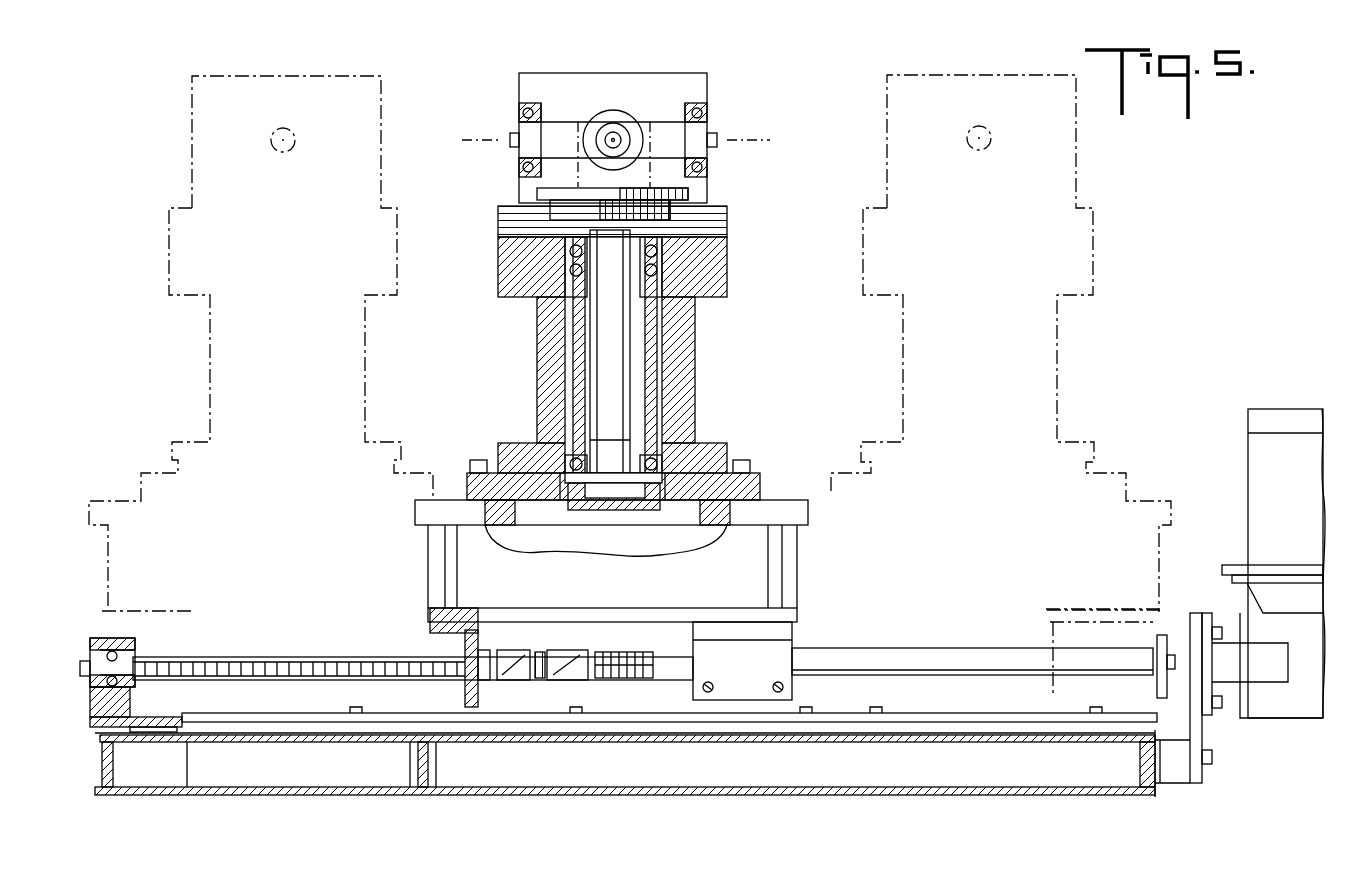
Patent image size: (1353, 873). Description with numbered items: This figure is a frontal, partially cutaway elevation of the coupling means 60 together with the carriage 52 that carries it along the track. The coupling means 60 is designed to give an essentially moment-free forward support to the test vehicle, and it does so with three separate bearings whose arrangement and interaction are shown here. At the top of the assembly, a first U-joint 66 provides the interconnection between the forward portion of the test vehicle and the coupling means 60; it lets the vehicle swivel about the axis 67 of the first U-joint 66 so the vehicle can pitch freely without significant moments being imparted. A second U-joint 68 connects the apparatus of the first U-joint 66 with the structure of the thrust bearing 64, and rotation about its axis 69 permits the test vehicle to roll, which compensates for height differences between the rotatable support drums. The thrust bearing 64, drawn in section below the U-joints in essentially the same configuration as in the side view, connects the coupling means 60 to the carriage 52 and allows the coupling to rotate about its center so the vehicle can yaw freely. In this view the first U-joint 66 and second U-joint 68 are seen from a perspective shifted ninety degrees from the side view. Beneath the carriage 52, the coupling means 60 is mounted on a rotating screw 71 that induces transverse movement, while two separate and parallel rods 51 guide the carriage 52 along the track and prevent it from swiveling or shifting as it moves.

The parallel rods 51 is at (882, 648).
The carriage 52 is at (808, 512).
The coupling means 60 is at (764, 114).
The thrust bearing 64 is at (685, 210).
The first U-joint 66 is at (729, 156).
The axis of the first U-joint 67 is at (483, 140).
The second U-joint 68 is at (613, 127).
The axis of the second U-joint 69 is at (613, 140).
The rotating screw 71 is at (243, 652).